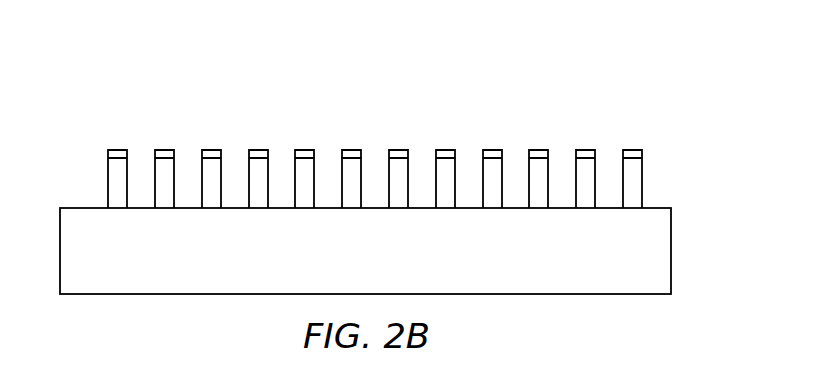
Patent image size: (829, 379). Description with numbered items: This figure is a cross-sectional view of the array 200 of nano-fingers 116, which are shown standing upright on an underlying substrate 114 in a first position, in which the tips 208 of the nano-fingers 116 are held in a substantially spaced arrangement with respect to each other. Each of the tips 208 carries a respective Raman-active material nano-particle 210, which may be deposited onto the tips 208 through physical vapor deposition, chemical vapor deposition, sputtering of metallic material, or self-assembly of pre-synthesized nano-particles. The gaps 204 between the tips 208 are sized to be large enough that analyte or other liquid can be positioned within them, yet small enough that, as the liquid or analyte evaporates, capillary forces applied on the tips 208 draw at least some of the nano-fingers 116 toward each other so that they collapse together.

The array 200 is at (125, 51).
The substrate 114 is at (671, 243).
The nano-fingers 116 is at (108, 183).
The gaps 204 is at (287, 143).
The tips 208 is at (380, 135).
The Raman-active material nano-particle 210 is at (344, 150).